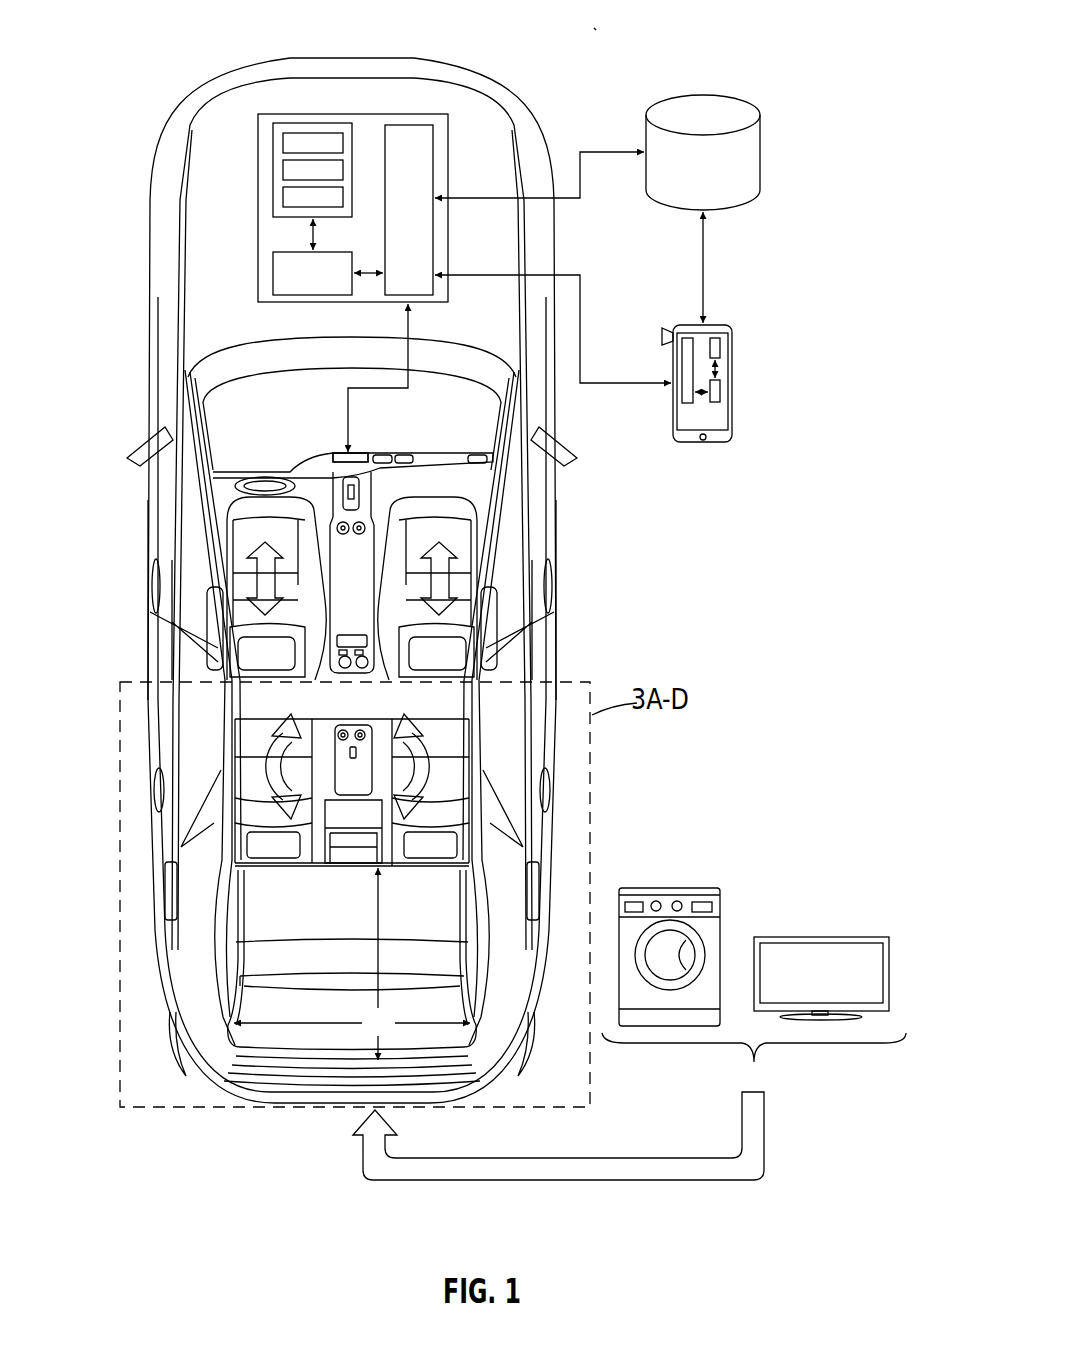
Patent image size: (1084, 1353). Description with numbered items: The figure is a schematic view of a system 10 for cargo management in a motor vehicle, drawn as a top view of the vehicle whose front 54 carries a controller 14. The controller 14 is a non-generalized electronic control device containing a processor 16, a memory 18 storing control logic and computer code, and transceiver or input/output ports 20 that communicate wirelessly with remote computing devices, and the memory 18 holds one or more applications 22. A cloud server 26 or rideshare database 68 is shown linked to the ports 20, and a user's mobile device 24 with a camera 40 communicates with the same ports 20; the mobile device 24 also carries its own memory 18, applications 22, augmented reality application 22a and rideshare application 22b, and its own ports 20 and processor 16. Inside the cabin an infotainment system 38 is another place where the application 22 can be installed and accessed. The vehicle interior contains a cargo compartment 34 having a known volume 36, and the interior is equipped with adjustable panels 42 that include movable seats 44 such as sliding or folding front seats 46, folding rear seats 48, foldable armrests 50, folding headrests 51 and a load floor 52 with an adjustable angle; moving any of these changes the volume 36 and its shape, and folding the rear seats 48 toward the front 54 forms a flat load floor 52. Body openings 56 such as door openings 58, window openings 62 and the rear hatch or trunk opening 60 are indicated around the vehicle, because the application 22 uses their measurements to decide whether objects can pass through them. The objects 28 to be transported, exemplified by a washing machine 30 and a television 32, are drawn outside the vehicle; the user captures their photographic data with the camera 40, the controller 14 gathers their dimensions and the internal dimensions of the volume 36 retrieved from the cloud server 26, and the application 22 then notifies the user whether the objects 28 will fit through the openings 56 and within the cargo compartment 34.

The system 10 is at (594, 28).
The controller 14 is at (449, 148).
The processor 16 is at (300, 285).
The memory 18 is at (313, 122).
The input/output ports 20 is at (397, 218).
The application 22 is at (283, 142).
The augmented reality application 22a is at (834, 334).
The rideshare application 22b is at (720, 347).
The mobile device 24 is at (732, 380).
The cloud server 26 is at (760, 209).
The rideshare database 68 is at (760, 160).
The object 28 is at (776, 939).
The washing machine 30 is at (668, 886).
The television 32 is at (820, 935).
The cargo compartment 34 is at (300, 1008).
The volume 36 is at (345, 1060).
The infotainment system 38 is at (358, 452).
The camera 40 is at (672, 333).
The adjustable panels 42 is at (408, 688).
The movable seats 44 is at (495, 546).
The front seats 46 is at (292, 552).
The folding rear seats 48 is at (279, 780).
The foldable armrests 50 is at (339, 788).
The folding headrests 51 is at (252, 666).
The load floor 52 is at (442, 917).
The front 54 is at (400, 58).
The body openings 56 is at (353, 600).
The door openings 58 is at (149, 552).
The rear hatch or trunk openings 60 is at (430, 1113).
The window openings 62 is at (205, 676).